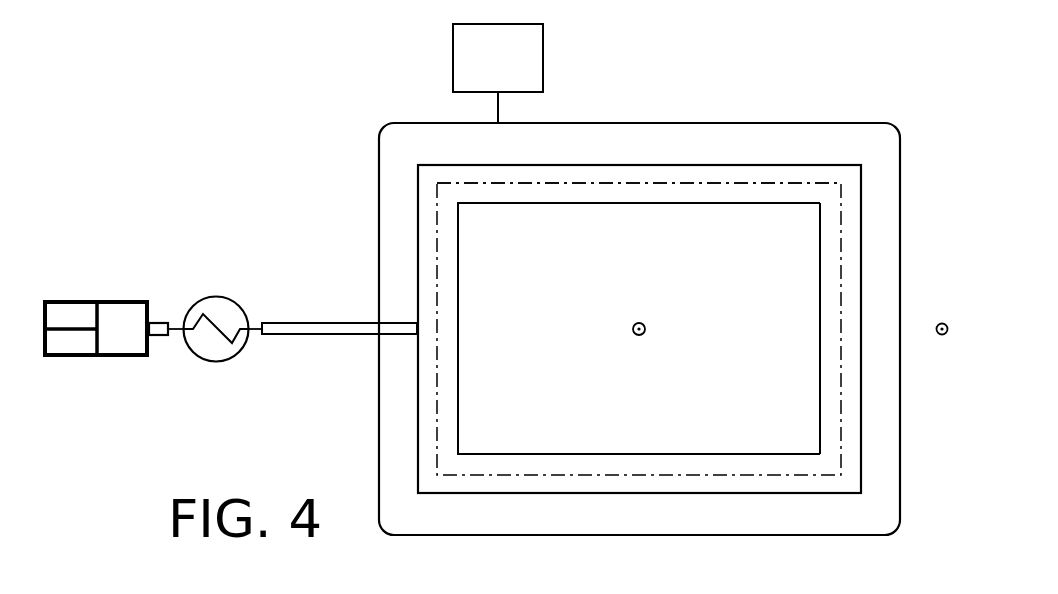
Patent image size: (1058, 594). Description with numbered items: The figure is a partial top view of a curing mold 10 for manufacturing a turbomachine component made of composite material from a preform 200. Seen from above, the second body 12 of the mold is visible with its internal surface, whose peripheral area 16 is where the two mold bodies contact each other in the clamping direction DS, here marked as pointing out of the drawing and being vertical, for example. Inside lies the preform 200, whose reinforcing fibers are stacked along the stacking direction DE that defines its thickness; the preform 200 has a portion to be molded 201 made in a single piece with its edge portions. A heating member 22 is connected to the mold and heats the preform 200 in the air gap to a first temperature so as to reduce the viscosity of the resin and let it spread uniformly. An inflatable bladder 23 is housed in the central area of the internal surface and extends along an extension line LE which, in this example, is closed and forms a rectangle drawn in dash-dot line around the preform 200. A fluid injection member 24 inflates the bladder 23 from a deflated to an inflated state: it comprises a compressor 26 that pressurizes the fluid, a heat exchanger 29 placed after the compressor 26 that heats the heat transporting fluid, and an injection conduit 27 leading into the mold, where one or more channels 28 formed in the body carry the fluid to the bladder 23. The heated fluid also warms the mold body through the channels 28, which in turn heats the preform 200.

The curing mold 10 is at (911, 116).
The second body 12 is at (880, 203).
The peripheral area 16 is at (880, 253).
The heating member 22 is at (498, 73).
The inflatable bladder 23 is at (792, 172).
The fluid injection member 24 is at (171, 405).
The compressor 26 is at (85, 300).
The injection conduit 27 is at (328, 323).
The channel 28 is at (397, 334).
The heat exchanger 29 is at (231, 297).
The preform 200 is at (710, 344).
The portion to be molded 201 is at (793, 326).
The extension line LE is at (615, 183).
The stacking direction DE is at (646, 322).
The clamping direction DS is at (942, 340).